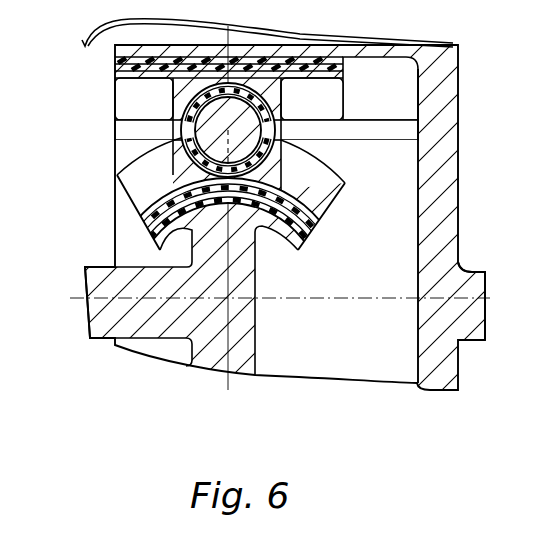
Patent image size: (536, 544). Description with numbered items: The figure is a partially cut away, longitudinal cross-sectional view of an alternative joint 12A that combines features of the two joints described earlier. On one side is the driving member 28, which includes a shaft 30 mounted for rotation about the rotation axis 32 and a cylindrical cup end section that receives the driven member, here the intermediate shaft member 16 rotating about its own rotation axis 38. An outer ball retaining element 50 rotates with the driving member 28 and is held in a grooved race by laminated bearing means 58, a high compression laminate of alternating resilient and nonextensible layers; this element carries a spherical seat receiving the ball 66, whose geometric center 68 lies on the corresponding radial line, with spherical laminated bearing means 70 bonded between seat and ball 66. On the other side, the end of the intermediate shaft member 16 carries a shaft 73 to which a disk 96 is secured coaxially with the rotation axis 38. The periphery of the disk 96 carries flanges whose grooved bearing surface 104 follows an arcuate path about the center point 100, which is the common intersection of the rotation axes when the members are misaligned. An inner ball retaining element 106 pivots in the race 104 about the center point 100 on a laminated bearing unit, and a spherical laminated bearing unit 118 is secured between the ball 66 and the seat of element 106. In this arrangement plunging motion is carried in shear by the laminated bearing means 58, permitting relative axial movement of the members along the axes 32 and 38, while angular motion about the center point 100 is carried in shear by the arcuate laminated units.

The joint 12A is at (456, 66).
The laminated bearing means 58 is at (342, 72).
The outer ball retaining element 50 is at (342, 96).
The spherical laminated bearing means 70 is at (190, 94).
The ball 66 is at (185, 133).
The geometric center 68 is at (228, 130).
The spherical laminated bearing unit 118 is at (185, 148).
The inner ball retaining element 106 is at (305, 170).
The grooved bearing surface 104 is at (154, 230).
The disk 96 is at (256, 258).
The center point 100 is at (232, 300).
The rotation axis 32 is at (393, 303).
The shaft 30 is at (470, 272).
The driving member 28 is at (462, 341).
The intermediate shaft member 16 is at (113, 347).
The rotation axis 38 is at (180, 300).
The shaft 73 is at (110, 267).